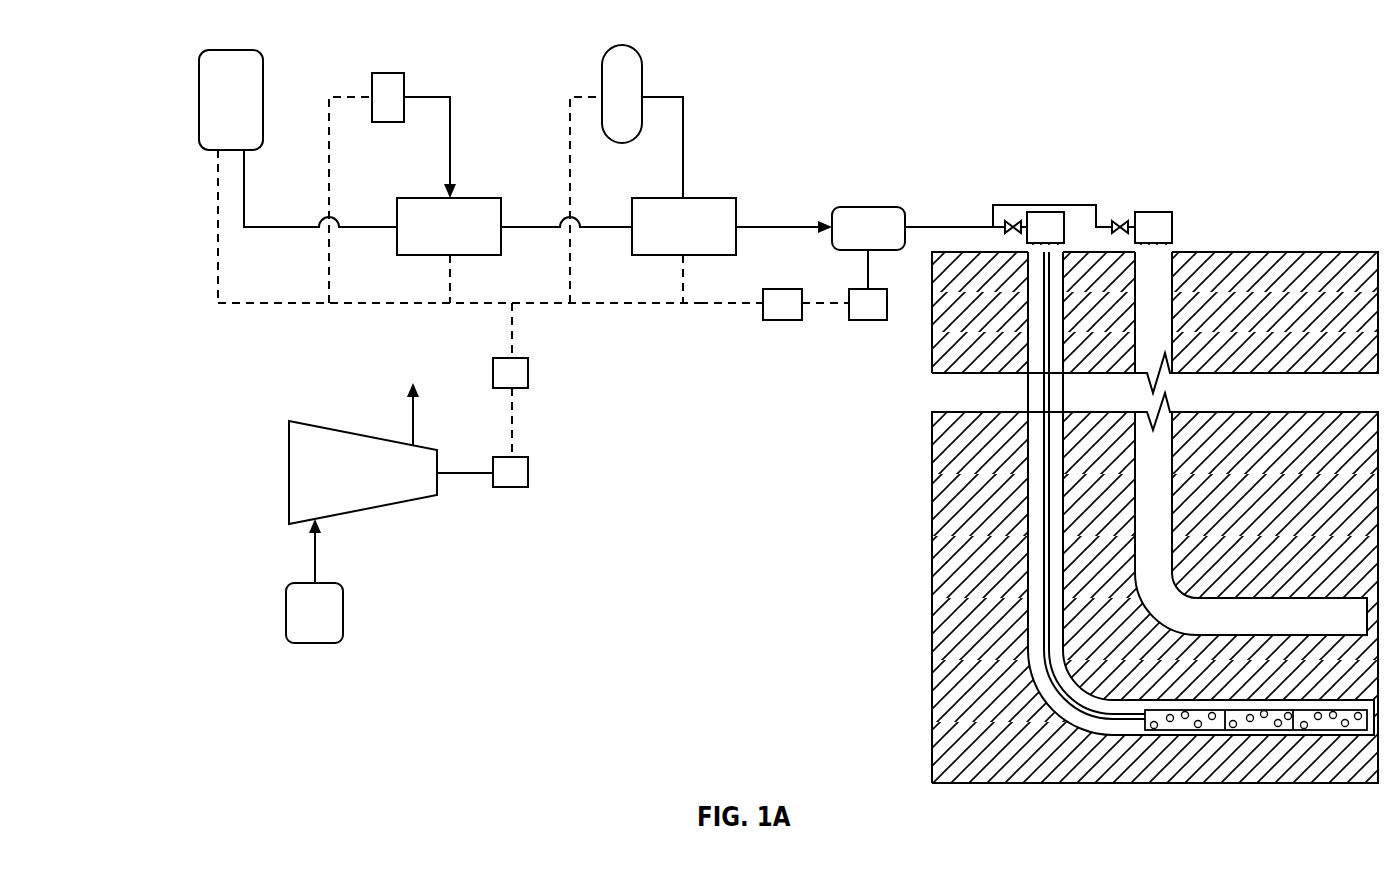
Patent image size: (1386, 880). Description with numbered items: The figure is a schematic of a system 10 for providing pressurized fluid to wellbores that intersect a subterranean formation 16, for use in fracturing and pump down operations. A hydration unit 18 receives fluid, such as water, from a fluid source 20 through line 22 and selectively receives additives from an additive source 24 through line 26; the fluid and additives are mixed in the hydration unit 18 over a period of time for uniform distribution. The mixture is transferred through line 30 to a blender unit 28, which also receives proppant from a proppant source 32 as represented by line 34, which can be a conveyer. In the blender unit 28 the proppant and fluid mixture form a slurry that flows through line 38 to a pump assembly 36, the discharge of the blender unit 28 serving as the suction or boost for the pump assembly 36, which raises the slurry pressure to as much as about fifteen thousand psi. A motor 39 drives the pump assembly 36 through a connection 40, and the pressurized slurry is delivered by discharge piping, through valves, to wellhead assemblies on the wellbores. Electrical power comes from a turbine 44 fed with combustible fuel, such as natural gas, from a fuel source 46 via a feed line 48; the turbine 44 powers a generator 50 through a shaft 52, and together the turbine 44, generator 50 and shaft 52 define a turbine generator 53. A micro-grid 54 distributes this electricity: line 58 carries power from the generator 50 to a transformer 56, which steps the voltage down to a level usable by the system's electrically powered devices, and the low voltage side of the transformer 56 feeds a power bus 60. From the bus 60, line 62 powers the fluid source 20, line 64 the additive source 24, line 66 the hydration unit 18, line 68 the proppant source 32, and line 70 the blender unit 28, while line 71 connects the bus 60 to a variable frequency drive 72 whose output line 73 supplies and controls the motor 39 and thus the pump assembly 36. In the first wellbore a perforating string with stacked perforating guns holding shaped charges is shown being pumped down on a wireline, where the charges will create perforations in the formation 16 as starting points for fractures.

The system 10 is at (1024, 60).
The subterranean formation 16 is at (932, 477).
The hydration unit 18 is at (480, 198).
The fluid source 20 is at (199, 101).
The line 22 is at (270, 226).
The additive source 24 is at (385, 73).
The line 26 is at (427, 97).
The blender unit 28 is at (705, 198).
The line 30 is at (520, 227).
The proppant source 32 is at (602, 78).
The line 34 is at (702, 75).
The pump assembly 36 is at (866, 207).
The line 38 is at (770, 227).
The motor 39 is at (868, 320).
The connection 40 is at (868, 280).
The turbine 44 is at (289, 473).
The fuel source 46 is at (286, 615).
The feed line 48 is at (315, 553).
The generator 50 is at (528, 473).
The shaft 52 is at (465, 473).
The turbine generator 53 is at (498, 529).
The micro-grid 54 is at (662, 458).
The transformer 56 is at (528, 372).
The line 58 is at (512, 426).
The power bus 60 is at (290, 303).
The line 62 is at (218, 290).
The line 64 is at (329, 290).
The line 66 is at (450, 290).
The line 68 is at (570, 290).
The line 70 is at (683, 292).
The line 71 is at (750, 303).
The variable frequency drive 72 is at (780, 320).
The line 73 is at (832, 303).